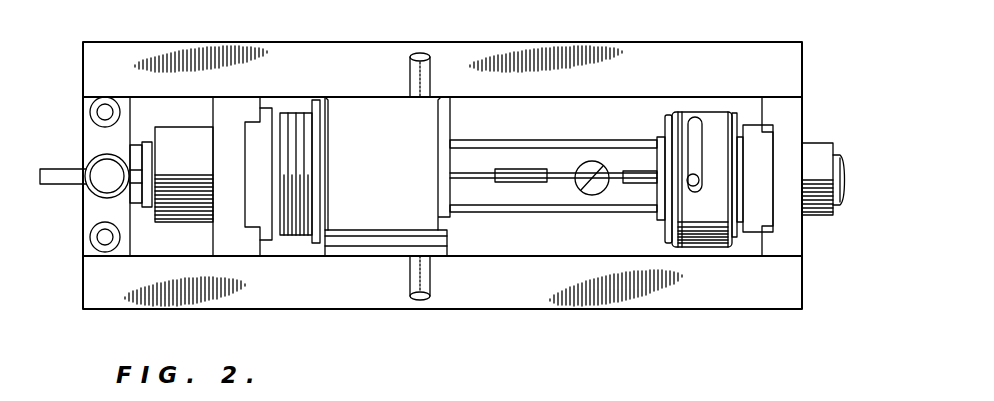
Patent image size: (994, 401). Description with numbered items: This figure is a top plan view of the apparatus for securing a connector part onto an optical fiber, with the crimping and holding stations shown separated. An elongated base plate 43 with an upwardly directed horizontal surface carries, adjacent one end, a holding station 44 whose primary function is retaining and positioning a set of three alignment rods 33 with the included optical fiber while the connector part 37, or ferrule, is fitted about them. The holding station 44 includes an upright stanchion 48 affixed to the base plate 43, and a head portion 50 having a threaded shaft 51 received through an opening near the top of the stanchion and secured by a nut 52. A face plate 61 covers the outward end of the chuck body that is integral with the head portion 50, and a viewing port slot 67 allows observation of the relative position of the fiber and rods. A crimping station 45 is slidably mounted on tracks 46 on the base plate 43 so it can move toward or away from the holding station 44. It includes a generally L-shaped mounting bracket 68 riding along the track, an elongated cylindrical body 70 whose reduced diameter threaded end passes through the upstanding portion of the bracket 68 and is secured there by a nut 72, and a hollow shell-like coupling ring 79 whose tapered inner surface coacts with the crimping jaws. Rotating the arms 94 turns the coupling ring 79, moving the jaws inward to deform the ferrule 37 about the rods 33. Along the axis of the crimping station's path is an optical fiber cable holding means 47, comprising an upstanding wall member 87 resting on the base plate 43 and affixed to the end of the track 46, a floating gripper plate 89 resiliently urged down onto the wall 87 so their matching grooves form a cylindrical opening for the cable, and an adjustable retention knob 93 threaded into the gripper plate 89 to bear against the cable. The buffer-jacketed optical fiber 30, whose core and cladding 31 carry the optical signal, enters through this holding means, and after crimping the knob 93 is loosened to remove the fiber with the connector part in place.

The buffer-jacketed optical fiber 30 is at (52, 170).
The core and cladding 31 is at (566, 172).
The alignment rods 33 is at (630, 172).
The connector part 37 is at (517, 170).
The base plate 43 is at (190, 47).
The holding station 44 is at (712, 112).
The crimping station 45 is at (372, 100).
The tracks 46 is at (553, 195).
The optical fiber cable holding means 47 is at (88, 137).
The upright stanchion 48 is at (795, 245).
The head portion 50 is at (765, 140).
The threaded shaft 51 is at (845, 166).
The nut 52 is at (825, 212).
The face plate 61 is at (660, 137).
The viewing port slot 67 is at (693, 186).
The L-shaped mounting bracket 68 is at (248, 240).
The cylindrical body 70 is at (298, 117).
The nut 72 is at (186, 210).
The coupling ring 79 is at (385, 176).
The upstanding wall member 87 is at (83, 227).
The floating gripper plate 89 is at (130, 118).
The adjustable retention knob 93 is at (100, 183).
The arms 94 is at (424, 54).